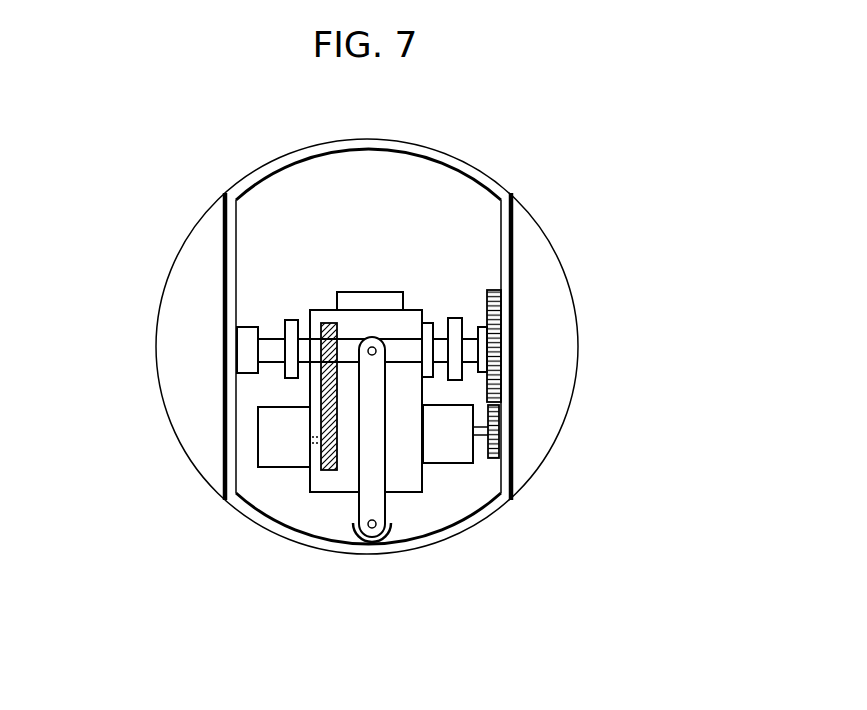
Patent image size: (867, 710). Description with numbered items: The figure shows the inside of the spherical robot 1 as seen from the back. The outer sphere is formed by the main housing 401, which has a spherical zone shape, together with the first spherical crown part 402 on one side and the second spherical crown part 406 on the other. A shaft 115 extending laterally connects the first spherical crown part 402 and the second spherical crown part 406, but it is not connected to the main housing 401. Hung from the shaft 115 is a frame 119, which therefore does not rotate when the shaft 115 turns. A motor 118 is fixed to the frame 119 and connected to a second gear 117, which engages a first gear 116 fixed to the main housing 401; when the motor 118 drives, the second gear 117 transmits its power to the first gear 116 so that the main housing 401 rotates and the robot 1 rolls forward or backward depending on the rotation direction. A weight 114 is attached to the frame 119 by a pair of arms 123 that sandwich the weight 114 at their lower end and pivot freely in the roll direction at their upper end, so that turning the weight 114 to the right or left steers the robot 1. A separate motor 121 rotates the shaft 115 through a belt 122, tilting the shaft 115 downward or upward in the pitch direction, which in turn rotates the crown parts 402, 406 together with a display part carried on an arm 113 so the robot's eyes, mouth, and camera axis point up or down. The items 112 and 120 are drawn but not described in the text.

The robot 1 is at (549, 163).
The main housing 401 is at (453, 151).
The first spherical crown part 402 is at (543, 231).
The second spherical crown part 406 is at (188, 242).
The disc 112 is at (289, 320).
The arm 113 is at (454, 318).
The weight 114 is at (373, 530).
The shaft 115 is at (272, 350).
The first gear 116 is at (493, 344).
The second gear 117 is at (491, 464).
The motor 118 is at (448, 448).
The frame 119 is at (322, 322).
The housing 120 is at (368, 292).
The motor 121 is at (277, 436).
The belt 122 is at (321, 452).
The pair of arms 123 is at (367, 470).